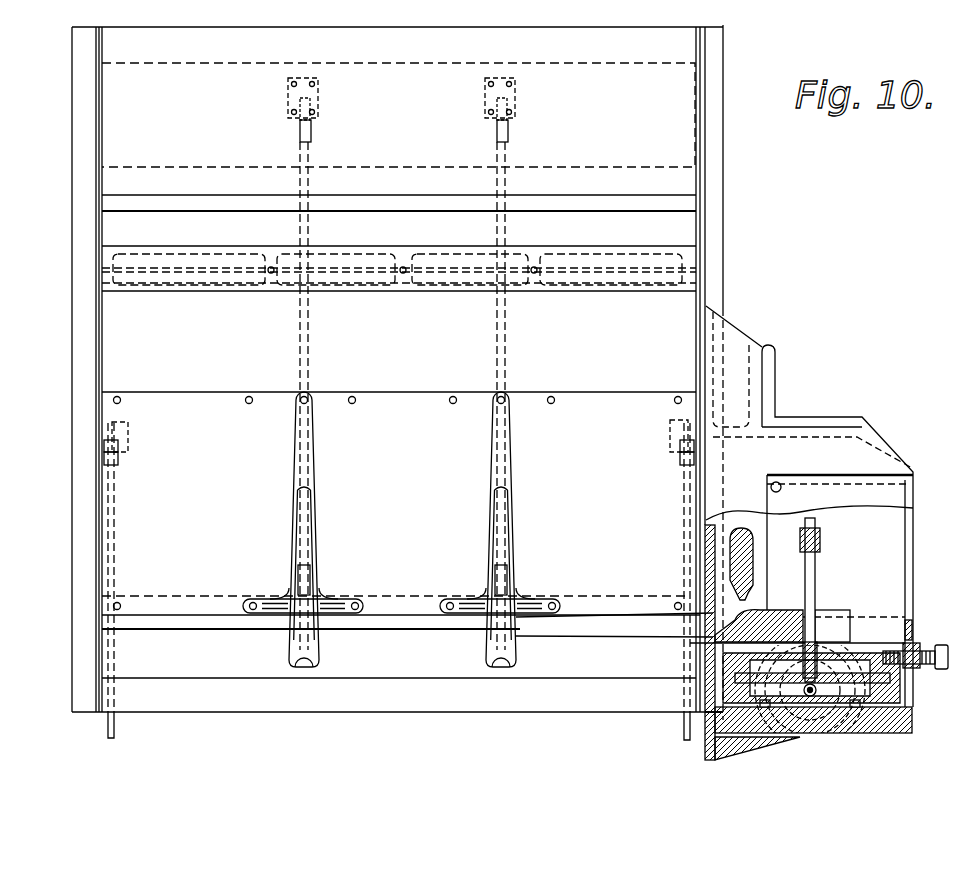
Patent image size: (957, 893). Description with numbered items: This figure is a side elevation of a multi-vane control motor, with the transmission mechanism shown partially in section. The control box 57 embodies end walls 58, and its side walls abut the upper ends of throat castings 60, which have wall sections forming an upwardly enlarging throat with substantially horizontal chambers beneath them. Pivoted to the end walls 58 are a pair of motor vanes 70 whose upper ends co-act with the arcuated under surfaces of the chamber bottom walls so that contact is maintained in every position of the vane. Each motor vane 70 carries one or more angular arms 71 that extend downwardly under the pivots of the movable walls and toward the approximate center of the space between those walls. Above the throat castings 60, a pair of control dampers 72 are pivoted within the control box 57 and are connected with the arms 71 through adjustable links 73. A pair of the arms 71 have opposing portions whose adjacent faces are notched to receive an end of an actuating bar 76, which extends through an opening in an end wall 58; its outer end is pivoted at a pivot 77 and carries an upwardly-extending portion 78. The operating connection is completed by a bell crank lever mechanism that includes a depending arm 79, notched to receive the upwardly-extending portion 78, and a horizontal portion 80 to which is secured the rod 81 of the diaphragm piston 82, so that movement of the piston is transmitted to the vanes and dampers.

The control box 57 is at (401, 535).
The end walls 58 is at (706, 295).
The throat castings 60 is at (405, 200).
The motor vanes 70 is at (399, 287).
The angular arms 71 is at (492, 540).
The control dampers 72 is at (422, 42).
The adjustable links 73 is at (497, 340).
The actuating bar 76 is at (602, 640).
The pivot 77 is at (710, 645).
The upwardly-extending portion 78 is at (742, 612).
The depending arm 79 is at (749, 584).
The horizontal portion 80 is at (762, 530).
The rod 81 is at (815, 595).
The diaphragm piston 82 is at (840, 672).